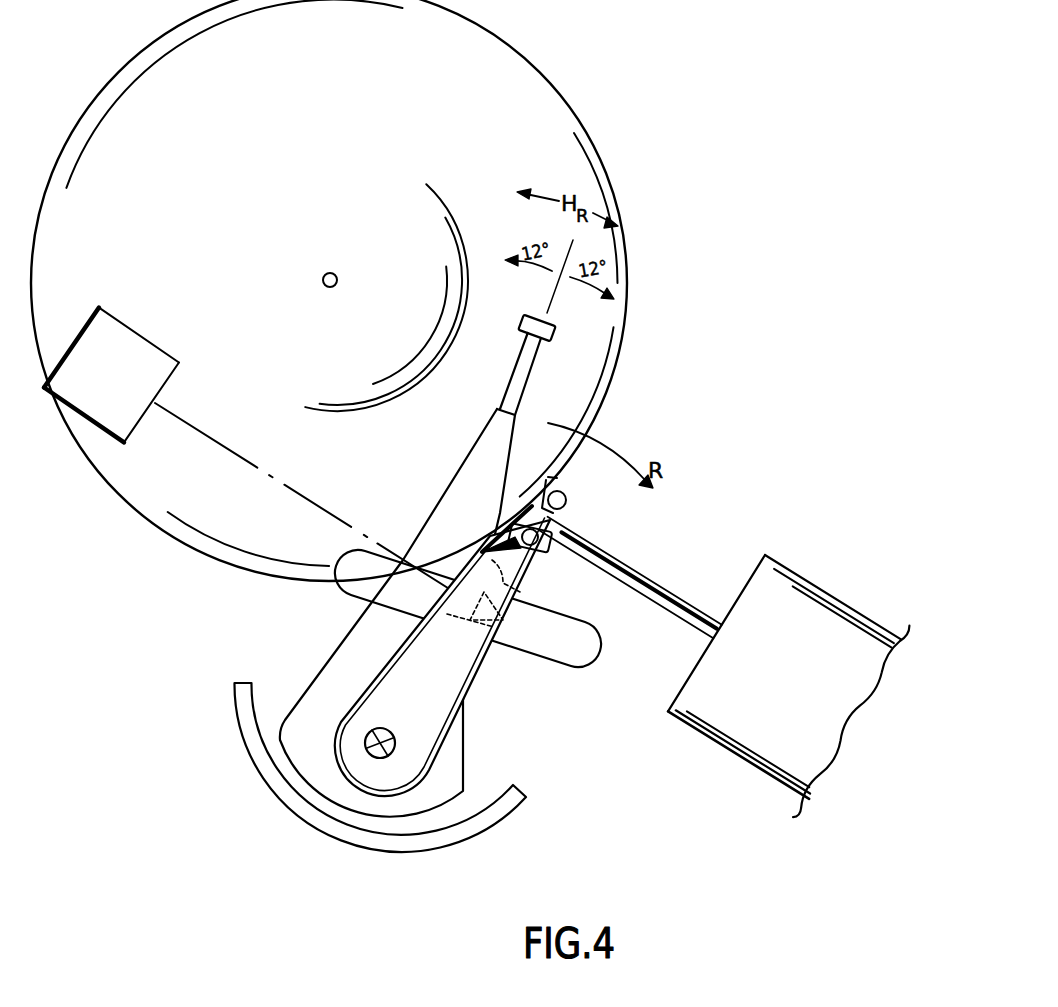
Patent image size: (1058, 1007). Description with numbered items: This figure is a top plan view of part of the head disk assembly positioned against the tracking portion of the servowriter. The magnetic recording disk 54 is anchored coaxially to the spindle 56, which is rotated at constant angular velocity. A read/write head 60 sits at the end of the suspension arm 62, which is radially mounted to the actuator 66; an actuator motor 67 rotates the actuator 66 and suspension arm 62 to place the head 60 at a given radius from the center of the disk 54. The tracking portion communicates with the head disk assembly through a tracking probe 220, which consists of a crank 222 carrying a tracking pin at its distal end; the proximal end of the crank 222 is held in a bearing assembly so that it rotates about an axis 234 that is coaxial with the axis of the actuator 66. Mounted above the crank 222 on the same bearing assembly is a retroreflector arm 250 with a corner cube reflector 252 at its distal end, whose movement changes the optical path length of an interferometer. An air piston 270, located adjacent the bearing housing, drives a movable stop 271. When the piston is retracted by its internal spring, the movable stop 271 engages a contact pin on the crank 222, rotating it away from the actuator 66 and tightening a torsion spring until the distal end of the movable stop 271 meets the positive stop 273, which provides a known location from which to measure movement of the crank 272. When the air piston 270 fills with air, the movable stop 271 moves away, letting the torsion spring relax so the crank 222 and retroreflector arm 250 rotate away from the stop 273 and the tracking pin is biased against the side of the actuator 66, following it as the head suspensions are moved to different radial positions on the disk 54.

The magnetic recording disk 54 is at (563, 93).
The spindle 56 is at (342, 265).
The read/write head 60 is at (555, 327).
The suspension arm 62 is at (530, 375).
The actuator 66 is at (458, 789).
The actuator motor 67 is at (523, 800).
The tracking probe 220 is at (488, 553).
The crank 222 is at (517, 567).
The axis 234 is at (366, 742).
The retroreflector arm 250 is at (460, 680).
The corner cube reflector 252 is at (472, 636).
The air piston 270 is at (784, 680).
The movable stop 271 is at (630, 578).
The crank 272 is at (163, 350).
The positive stop 273 is at (566, 500).